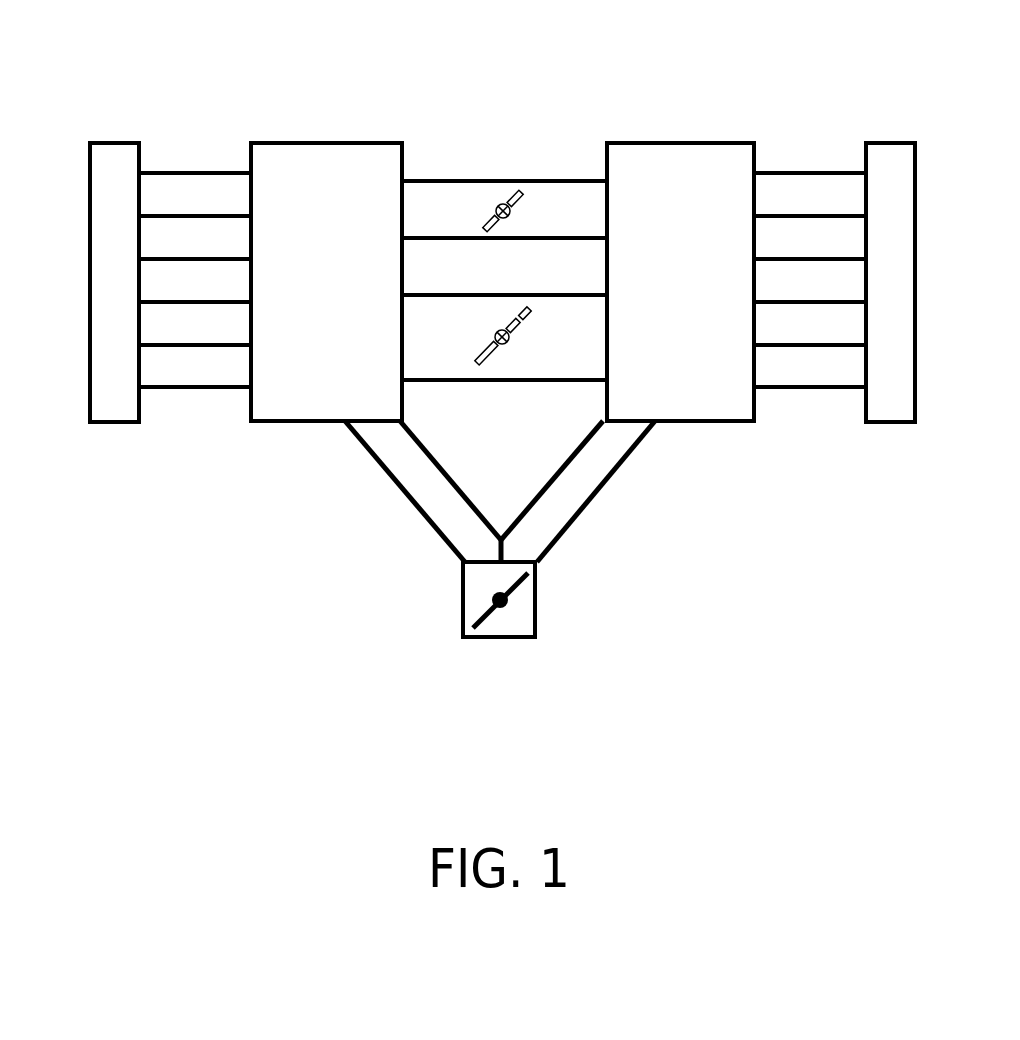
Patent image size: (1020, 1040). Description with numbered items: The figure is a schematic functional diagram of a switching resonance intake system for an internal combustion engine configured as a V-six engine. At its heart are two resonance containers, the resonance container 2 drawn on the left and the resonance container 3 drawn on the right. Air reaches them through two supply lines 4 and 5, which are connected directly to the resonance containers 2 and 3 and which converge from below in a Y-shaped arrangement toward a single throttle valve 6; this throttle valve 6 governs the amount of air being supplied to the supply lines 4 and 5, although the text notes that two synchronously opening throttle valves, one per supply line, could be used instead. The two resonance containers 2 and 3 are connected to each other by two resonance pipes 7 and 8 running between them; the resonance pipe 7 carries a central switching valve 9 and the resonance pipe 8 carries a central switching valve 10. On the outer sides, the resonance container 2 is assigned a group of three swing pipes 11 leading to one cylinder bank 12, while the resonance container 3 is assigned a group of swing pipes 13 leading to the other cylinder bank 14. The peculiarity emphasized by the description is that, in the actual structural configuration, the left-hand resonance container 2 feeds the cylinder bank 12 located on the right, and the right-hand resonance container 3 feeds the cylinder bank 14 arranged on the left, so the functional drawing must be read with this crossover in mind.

The resonance container 2 is at (313, 194).
The resonance container 3 is at (663, 195).
The supply line 4 is at (418, 475).
The supply line 5 is at (615, 450).
The throttle valve 6 is at (518, 618).
The resonance pipe 7 is at (447, 354).
The resonance pipe 8 is at (443, 195).
The central switching valve 9 is at (487, 355).
The central switching valve 10 is at (518, 195).
The swing pipes 11 is at (178, 283).
The cylinder bank 12 is at (111, 368).
The swing pipes 13 is at (803, 284).
The cylinder bank 14 is at (895, 369).